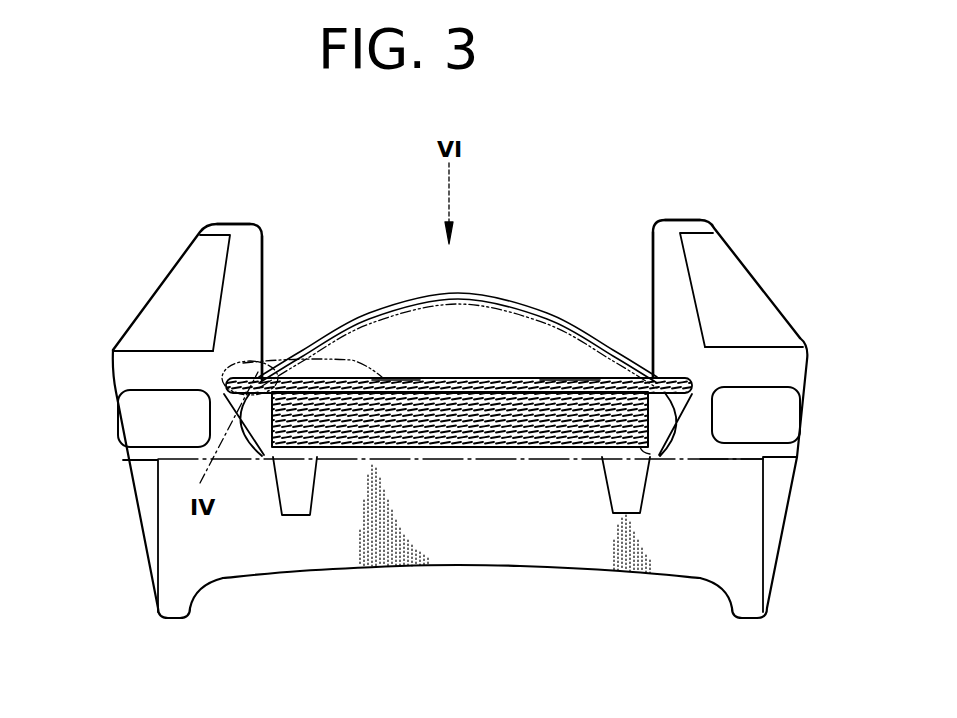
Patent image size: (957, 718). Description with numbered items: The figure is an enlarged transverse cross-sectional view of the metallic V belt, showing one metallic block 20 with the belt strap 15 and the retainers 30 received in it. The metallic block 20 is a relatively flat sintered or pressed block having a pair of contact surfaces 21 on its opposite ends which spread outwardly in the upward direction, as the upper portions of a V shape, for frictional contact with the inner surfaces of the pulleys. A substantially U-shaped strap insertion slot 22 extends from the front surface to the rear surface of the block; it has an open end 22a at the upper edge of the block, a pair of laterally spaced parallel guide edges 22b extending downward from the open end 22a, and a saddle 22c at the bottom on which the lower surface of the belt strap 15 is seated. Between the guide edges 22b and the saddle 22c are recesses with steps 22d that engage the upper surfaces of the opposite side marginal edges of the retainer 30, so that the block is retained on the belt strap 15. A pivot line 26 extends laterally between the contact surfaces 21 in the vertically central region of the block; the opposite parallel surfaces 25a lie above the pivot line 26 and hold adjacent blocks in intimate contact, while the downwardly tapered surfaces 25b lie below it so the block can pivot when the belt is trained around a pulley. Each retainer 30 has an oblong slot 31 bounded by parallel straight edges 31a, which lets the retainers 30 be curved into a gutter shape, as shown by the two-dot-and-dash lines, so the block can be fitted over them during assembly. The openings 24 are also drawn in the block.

The metallic block 20 is at (468, 400).
The contact surface 21 is at (146, 553).
The strap insertion slot 22 is at (437, 344).
The open end 22a is at (263, 237).
The guide edge 22b is at (266, 270).
The saddle 22c is at (458, 443).
The step 22d is at (256, 365).
The opening in body 24 is at (135, 405).
The parallel surface 25a is at (143, 358).
The tapered surface 25b is at (207, 562).
The pivot line 26 is at (718, 458).
The belt strap 15 is at (459, 409).
The retainer 30 is at (561, 378).
The slot 31 is at (441, 380).
The straight edge 31a is at (378, 379).